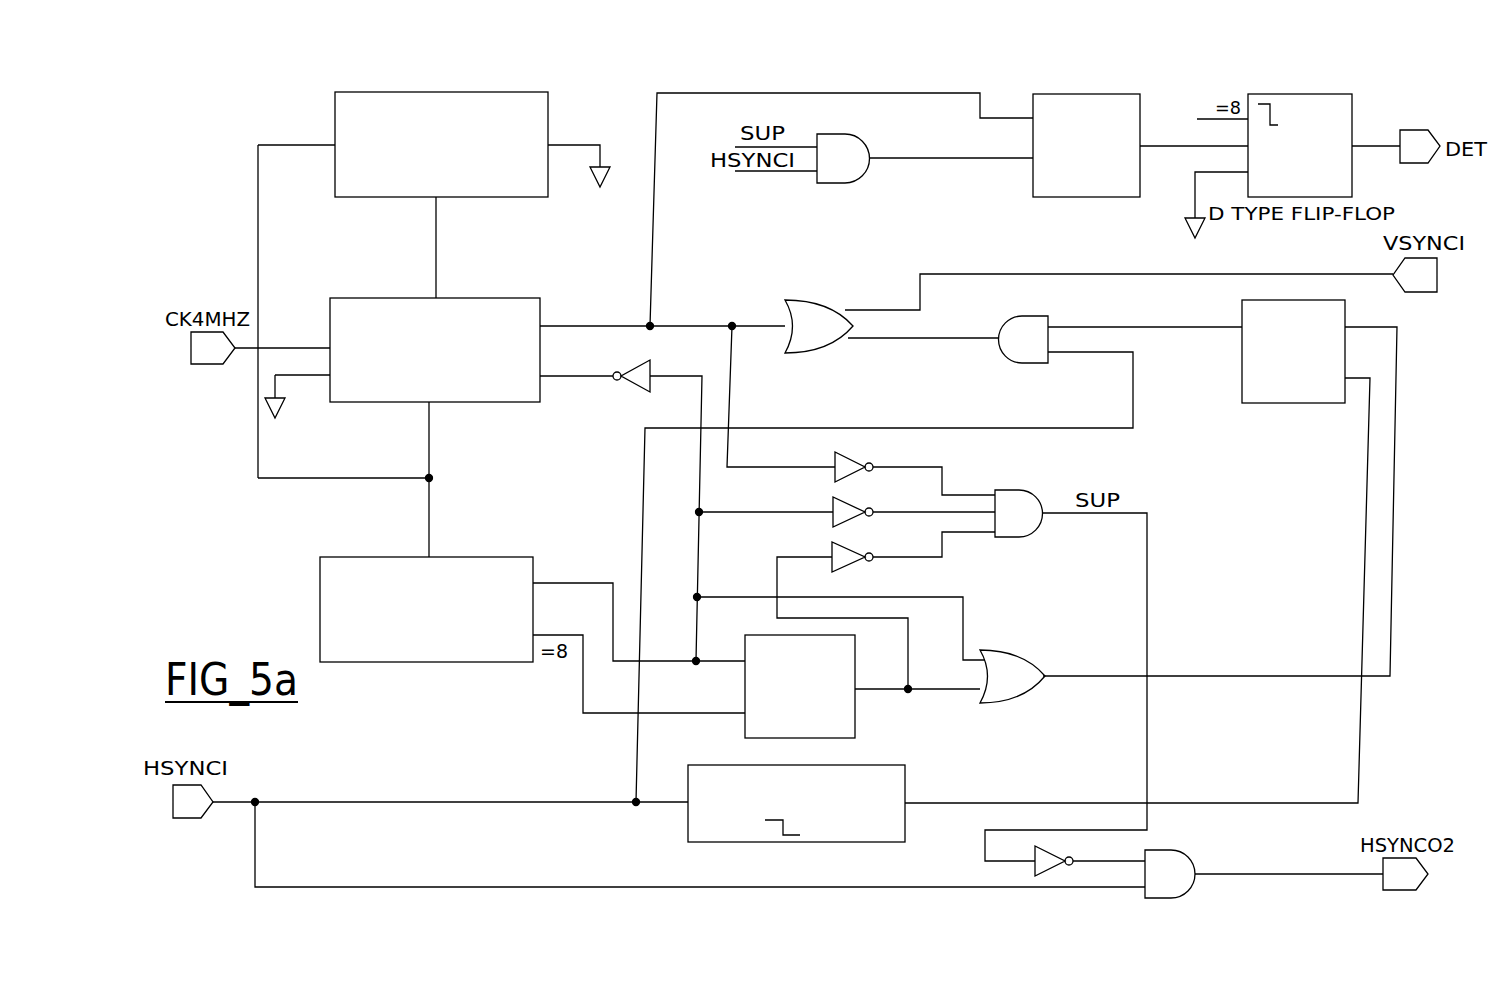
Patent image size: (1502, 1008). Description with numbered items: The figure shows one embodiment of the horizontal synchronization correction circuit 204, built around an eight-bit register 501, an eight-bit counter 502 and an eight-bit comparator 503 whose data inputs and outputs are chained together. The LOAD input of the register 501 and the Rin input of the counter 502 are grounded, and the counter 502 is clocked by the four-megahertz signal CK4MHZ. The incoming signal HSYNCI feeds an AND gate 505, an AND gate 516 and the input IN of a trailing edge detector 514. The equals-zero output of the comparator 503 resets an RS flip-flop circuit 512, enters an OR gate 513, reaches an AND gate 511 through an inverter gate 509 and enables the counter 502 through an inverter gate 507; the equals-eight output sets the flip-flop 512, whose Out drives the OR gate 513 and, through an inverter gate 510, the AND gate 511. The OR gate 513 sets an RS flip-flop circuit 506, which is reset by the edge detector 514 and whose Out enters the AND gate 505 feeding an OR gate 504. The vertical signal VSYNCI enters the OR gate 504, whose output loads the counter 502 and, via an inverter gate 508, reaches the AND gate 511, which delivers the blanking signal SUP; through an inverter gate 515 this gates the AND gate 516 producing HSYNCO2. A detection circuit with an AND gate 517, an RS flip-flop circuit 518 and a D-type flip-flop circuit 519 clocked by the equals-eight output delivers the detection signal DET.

The correction circuit 204 is at (274, 596).
The eight-bit register 501 is at (440, 92).
The eight-bit counter 502 is at (480, 298).
The comparator 503 is at (408, 662).
The OR gate 504 is at (817, 300).
The AND gate 505 is at (1000, 363).
The RS flip-flop circuit 506 is at (1287, 403).
The inverter gate 507 is at (632, 392).
The inverter gate 508 is at (857, 457).
The inverter gate 509 is at (857, 502).
The inverter gate 510 is at (857, 547).
The AND gate 511 is at (1025, 537).
The RS flip-flop circuit 512 is at (853, 718).
The OR gate 513 is at (1020, 700).
The trailing edge detector 514 is at (820, 842).
The inverter gate 515 is at (1055, 852).
The AND gate 516 is at (1180, 850).
The AND gate 517 is at (835, 183).
The RS flip-flop circuit 518 is at (1065, 197).
The D-type flip-flop circuit 519 is at (1290, 197).